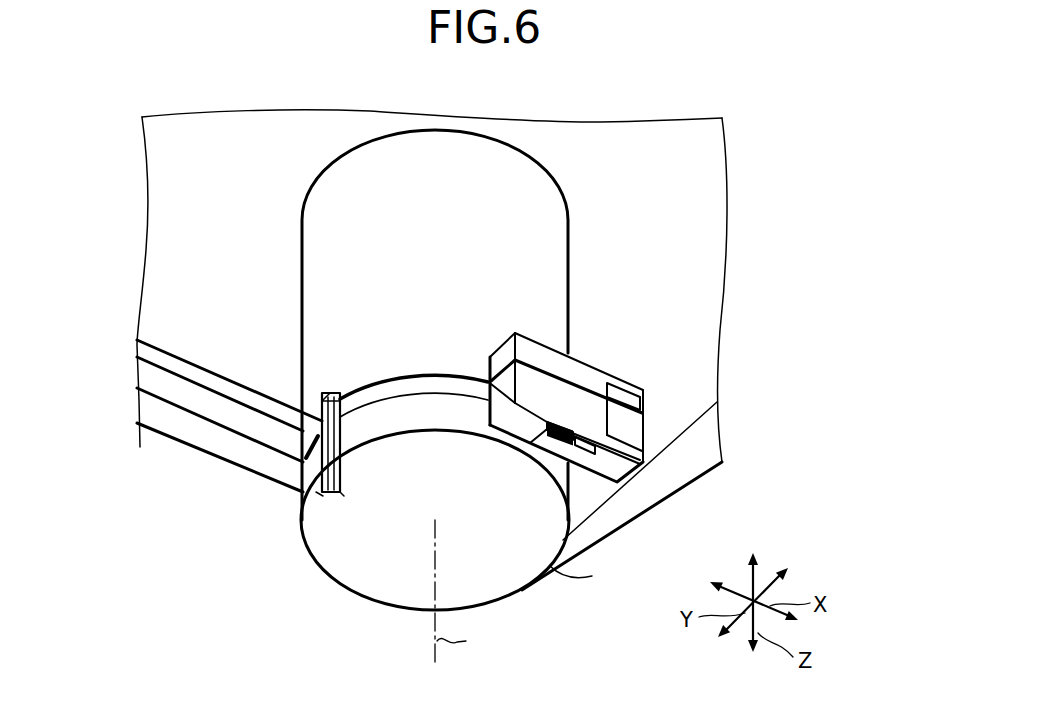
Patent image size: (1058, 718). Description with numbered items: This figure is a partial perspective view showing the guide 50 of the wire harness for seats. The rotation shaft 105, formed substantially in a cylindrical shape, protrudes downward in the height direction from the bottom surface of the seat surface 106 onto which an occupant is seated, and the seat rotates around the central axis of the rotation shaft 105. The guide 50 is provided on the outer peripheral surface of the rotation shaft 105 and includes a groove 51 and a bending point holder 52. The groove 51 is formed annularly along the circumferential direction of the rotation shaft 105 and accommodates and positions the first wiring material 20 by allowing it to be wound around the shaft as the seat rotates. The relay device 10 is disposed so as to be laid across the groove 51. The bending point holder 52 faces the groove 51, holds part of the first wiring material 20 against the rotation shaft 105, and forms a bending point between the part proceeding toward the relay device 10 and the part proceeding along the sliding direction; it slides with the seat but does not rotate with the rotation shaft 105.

The relay device 10 is at (596, 486).
The first wiring material 20 is at (212, 400).
The guide 50 is at (375, 376).
The groove 51 is at (390, 397).
The bending point holder 52 is at (317, 430).
The rotation shaft 105 is at (580, 290).
The seat surface 106 is at (615, 167).